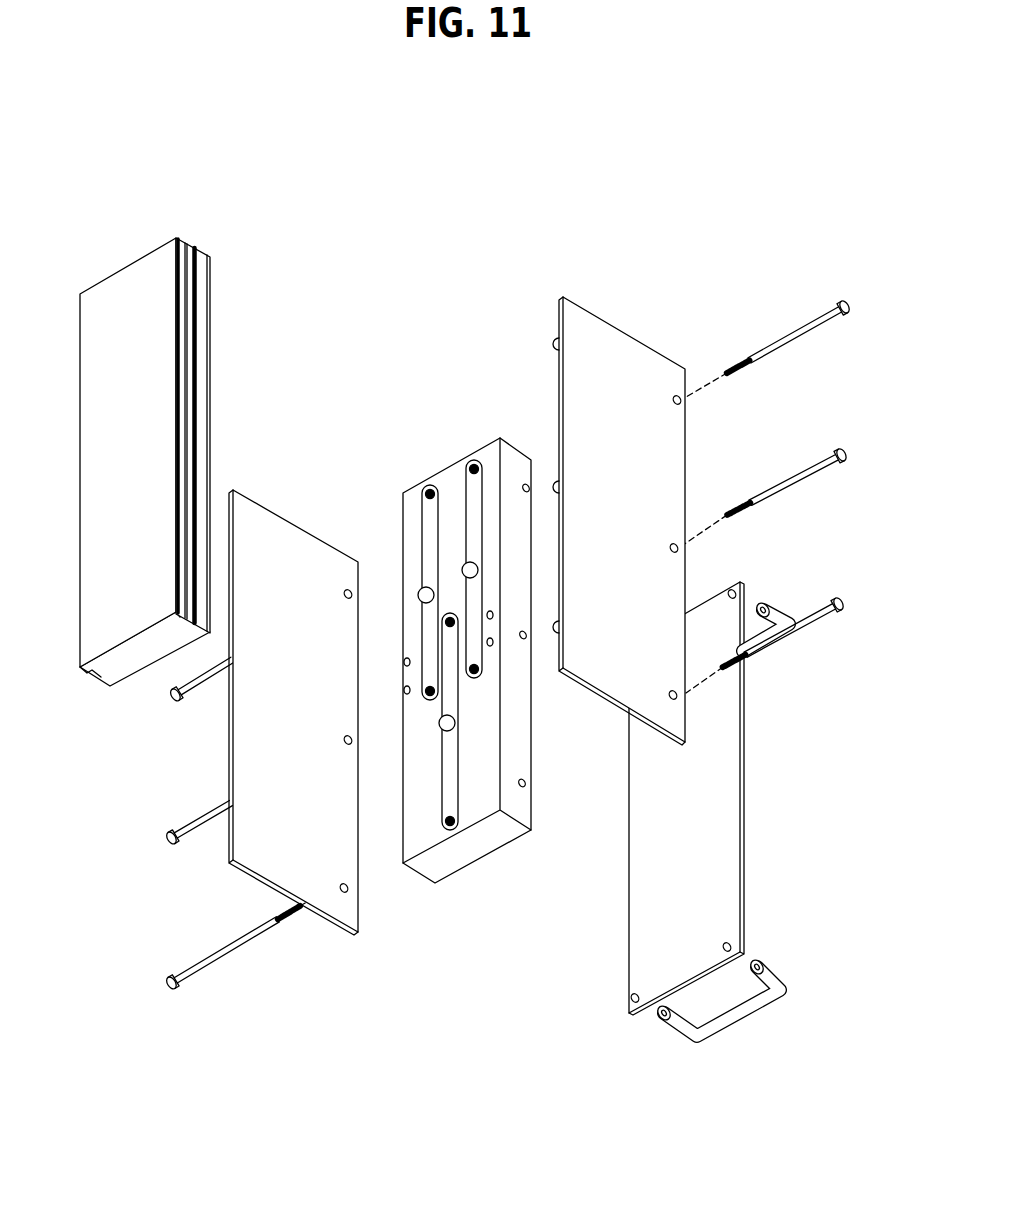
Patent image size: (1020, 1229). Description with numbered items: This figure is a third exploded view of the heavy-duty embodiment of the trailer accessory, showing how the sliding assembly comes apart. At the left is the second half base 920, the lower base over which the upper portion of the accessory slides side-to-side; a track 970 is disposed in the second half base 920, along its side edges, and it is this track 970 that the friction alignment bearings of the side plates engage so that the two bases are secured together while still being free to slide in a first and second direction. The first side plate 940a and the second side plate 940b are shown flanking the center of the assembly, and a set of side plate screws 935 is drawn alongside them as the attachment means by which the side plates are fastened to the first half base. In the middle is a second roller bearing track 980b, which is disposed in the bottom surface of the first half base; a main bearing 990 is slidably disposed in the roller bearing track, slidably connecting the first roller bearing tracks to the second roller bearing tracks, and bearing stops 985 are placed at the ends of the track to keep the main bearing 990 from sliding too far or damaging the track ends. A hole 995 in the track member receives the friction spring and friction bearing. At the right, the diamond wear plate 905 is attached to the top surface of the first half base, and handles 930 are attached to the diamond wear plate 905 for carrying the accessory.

The diamond wear plate 905 is at (743, 767).
The second half base 920 is at (127, 263).
The handles 930 is at (758, 1013).
The side plate screws 935 is at (777, 487).
The first side plate 940a is at (625, 332).
The second side plate 940b is at (296, 528).
The track 970 is at (178, 615).
The second roller bearing track 980b is at (474, 645).
The bearing stops 985 is at (470, 463).
The main bearing 990 is at (422, 590).
The hole 995 is at (493, 645).